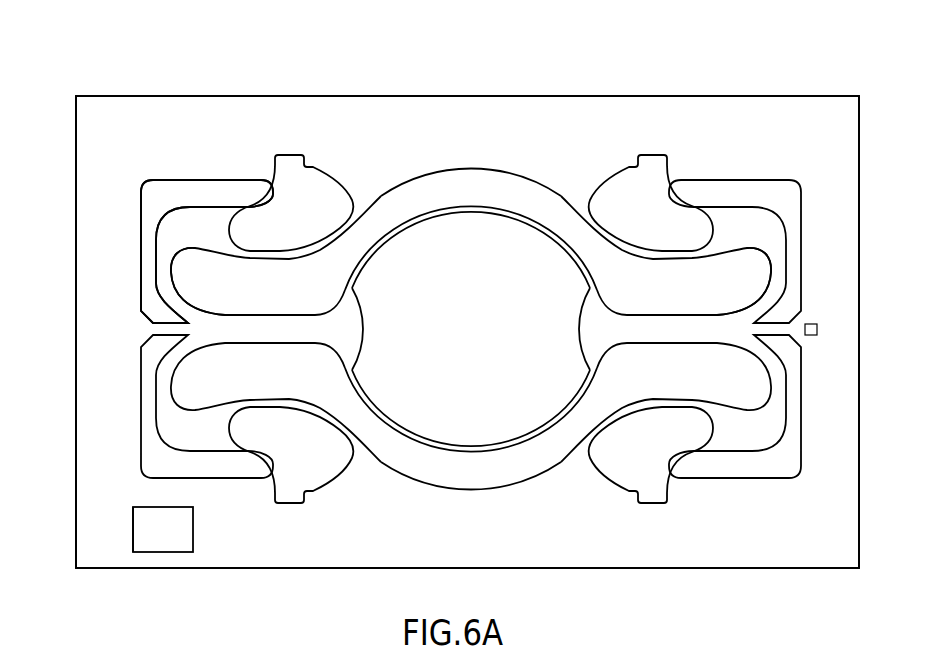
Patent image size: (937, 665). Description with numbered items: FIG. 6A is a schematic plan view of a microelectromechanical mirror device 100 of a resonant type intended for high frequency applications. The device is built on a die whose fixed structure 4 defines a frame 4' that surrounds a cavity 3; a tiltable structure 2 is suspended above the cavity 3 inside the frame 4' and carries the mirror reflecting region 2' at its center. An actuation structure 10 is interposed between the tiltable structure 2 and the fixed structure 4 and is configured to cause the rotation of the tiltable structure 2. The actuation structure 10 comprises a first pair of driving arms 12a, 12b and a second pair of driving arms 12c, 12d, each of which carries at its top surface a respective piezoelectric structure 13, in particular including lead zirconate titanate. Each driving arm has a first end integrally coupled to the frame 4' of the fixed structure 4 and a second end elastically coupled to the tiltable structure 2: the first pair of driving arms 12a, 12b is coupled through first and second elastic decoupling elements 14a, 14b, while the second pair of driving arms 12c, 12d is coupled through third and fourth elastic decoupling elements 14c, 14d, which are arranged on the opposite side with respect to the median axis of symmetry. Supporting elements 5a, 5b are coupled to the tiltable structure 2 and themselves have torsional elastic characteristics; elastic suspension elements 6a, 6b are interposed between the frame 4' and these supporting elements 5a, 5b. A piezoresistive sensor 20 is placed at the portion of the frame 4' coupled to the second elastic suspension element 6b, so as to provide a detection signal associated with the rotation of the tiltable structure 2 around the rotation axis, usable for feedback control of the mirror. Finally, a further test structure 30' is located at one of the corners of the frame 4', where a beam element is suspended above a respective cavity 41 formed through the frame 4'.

The microelectromechanical mirror device 100 is at (863, 90).
The fixed structure 4 is at (457, 297).
The frame 4' is at (54, 332).
The actuation structure 10 is at (232, 200).
The driving arm 12a is at (190, 223).
The driving arm 12b is at (205, 435).
The driving arm 12c is at (740, 228).
The driving arm 12d is at (747, 435).
The piezoelectric structure 13 is at (312, 193).
The first elastic decoupling element 14a is at (163, 270).
The second elastic decoupling element 14b is at (167, 380).
The third elastic decoupling element 14c is at (777, 267).
The fourth elastic decoupling element 14d is at (777, 388).
The supporting element 5a is at (270, 322).
The supporting element 5b is at (682, 328).
The cavity 3 is at (458, 478).
The tiltable structure 2 is at (471, 412).
The mirror reflecting region 2' is at (471, 329).
The first elastic suspension element 6a is at (170, 330).
The second elastic suspension element 6b is at (773, 327).
The piezoresistive sensor 20 is at (817, 331).
The test structure 30' is at (109, 563).
The cavity 41 is at (188, 534).